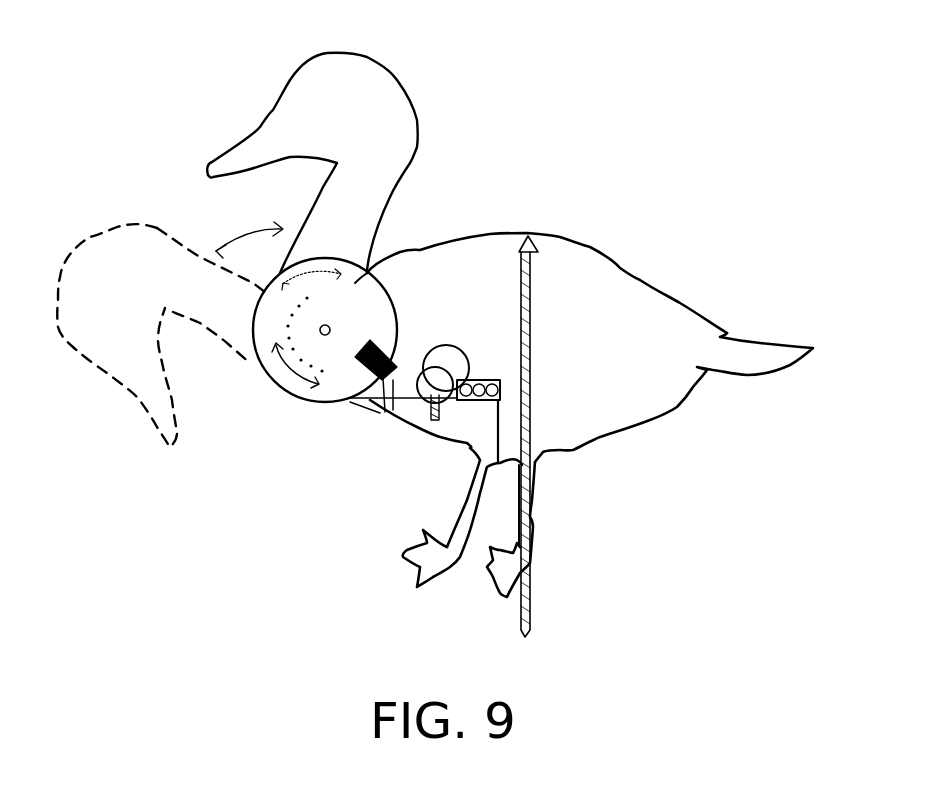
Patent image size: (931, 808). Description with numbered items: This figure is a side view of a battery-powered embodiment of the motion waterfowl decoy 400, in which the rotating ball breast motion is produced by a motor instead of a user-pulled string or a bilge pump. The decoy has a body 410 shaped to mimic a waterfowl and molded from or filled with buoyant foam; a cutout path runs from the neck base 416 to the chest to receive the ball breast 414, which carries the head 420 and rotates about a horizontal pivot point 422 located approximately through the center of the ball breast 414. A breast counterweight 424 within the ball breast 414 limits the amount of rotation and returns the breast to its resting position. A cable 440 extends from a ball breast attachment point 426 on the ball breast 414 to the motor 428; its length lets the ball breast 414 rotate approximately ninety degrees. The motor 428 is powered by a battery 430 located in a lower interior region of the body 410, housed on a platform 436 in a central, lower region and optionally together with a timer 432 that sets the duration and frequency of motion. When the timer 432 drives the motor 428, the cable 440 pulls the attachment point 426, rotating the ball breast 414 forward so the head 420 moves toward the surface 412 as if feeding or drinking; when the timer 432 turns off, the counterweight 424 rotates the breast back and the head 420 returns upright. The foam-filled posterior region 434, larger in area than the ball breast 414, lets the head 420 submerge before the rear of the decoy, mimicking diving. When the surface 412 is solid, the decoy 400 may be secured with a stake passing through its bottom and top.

The waterfowl decoy 400 is at (575, 126).
The body 410 is at (587, 250).
The surface 412 is at (532, 603).
The ball breast 414 is at (316, 373).
The neck base 416 is at (368, 272).
The head 420 is at (380, 100).
The horizontal pivot point 422 is at (329, 326).
The breast counterweight 424 is at (356, 368).
The ball breast attachment point 426 is at (363, 413).
The motor 428 is at (440, 345).
The battery 430 is at (501, 378).
The timer 432 is at (500, 382).
The posterior region 434 is at (647, 317).
The platform 436 is at (485, 435).
The cable 440 is at (439, 366).